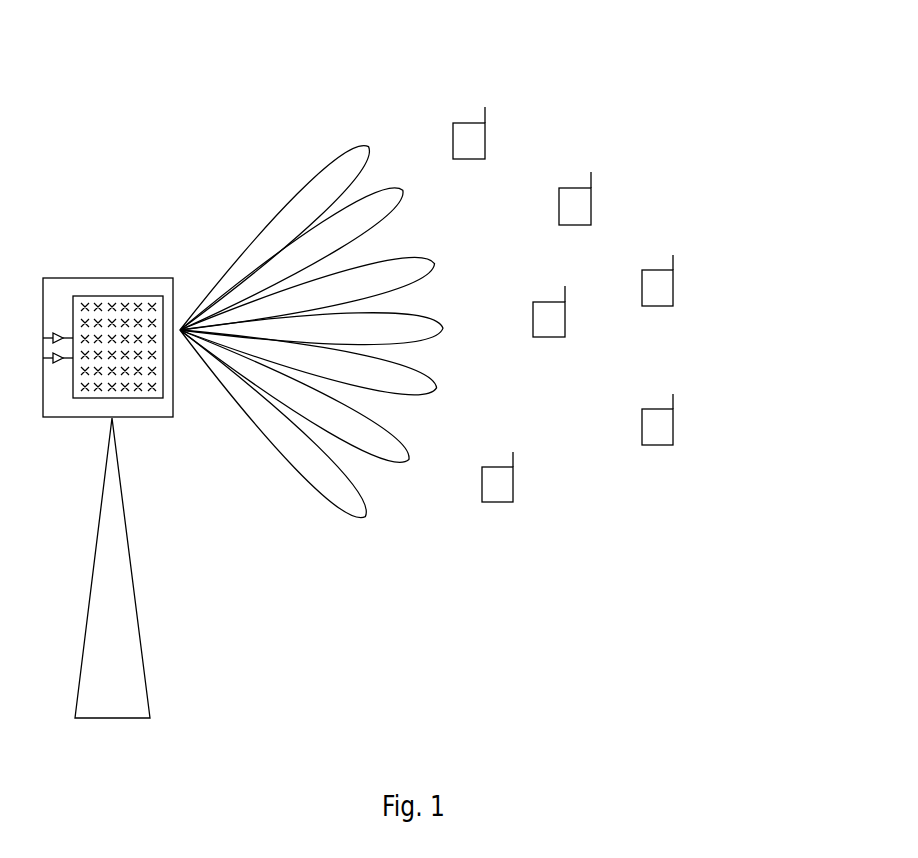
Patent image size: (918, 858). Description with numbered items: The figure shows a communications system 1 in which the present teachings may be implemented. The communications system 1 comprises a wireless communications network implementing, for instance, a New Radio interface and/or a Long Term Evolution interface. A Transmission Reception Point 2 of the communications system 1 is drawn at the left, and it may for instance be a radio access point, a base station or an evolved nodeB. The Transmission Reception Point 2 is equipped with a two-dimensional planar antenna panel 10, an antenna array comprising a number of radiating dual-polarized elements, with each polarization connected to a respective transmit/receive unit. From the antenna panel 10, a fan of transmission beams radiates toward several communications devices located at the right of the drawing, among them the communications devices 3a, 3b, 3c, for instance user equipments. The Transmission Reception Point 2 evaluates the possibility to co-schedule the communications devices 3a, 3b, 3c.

The communications system 1 is at (644, 94).
The Transmission Reception Point (TRP) 2 is at (50, 258).
The antenna panel 10 is at (145, 296).
The communications device 3a is at (500, 488).
The communications device 3b is at (660, 431).
The communications device 3c is at (660, 291).